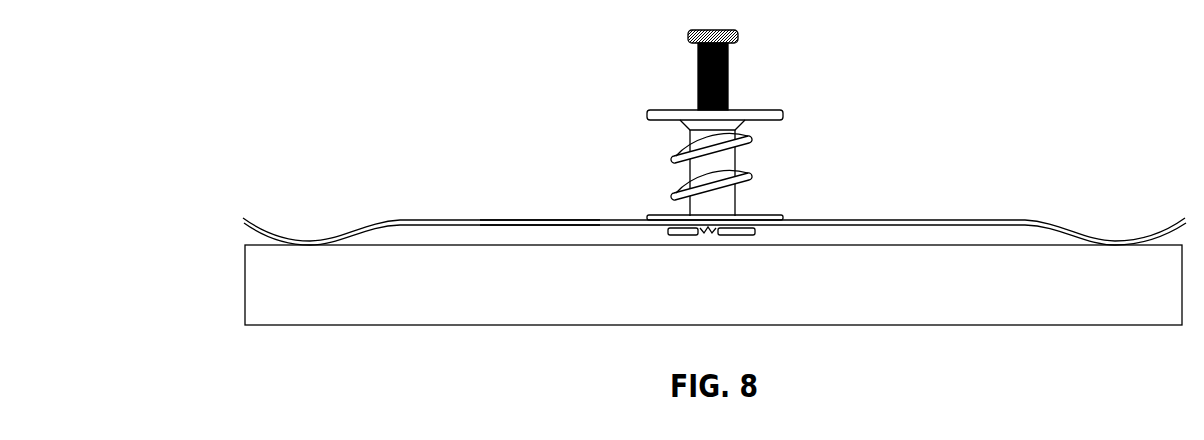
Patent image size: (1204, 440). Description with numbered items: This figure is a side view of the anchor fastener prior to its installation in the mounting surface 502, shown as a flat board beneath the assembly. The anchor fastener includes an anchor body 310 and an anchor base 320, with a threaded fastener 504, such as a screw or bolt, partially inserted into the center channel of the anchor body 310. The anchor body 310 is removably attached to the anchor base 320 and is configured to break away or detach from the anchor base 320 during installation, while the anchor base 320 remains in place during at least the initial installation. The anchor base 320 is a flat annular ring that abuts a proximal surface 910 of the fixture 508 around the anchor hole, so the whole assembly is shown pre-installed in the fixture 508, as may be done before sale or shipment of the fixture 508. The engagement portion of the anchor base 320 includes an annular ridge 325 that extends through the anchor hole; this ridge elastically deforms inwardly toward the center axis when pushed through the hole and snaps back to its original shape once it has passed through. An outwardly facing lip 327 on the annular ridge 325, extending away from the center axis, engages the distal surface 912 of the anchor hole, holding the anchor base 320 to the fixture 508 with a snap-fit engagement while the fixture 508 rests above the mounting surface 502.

The mounting surface 502 is at (289, 313).
The fixture 508 is at (368, 232).
The proximal surface 910 is at (529, 203).
The distal surface 912 is at (534, 240).
The anchor body 310 is at (770, 148).
The threaded fastener 504 is at (730, 73).
The anchor base 320 is at (772, 216).
The outwardly facing lip 327 is at (675, 237).
The annular ridge 325 is at (696, 237).